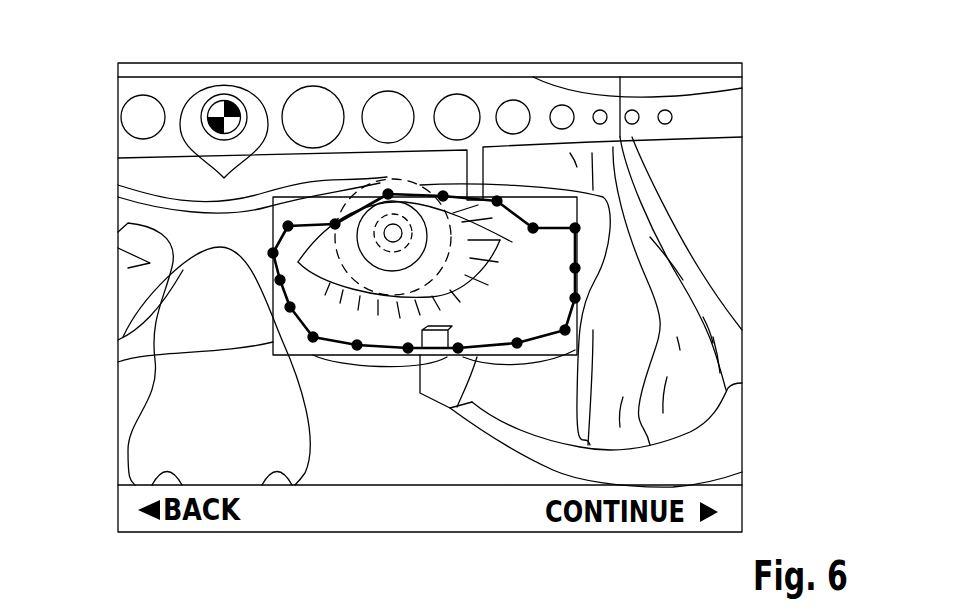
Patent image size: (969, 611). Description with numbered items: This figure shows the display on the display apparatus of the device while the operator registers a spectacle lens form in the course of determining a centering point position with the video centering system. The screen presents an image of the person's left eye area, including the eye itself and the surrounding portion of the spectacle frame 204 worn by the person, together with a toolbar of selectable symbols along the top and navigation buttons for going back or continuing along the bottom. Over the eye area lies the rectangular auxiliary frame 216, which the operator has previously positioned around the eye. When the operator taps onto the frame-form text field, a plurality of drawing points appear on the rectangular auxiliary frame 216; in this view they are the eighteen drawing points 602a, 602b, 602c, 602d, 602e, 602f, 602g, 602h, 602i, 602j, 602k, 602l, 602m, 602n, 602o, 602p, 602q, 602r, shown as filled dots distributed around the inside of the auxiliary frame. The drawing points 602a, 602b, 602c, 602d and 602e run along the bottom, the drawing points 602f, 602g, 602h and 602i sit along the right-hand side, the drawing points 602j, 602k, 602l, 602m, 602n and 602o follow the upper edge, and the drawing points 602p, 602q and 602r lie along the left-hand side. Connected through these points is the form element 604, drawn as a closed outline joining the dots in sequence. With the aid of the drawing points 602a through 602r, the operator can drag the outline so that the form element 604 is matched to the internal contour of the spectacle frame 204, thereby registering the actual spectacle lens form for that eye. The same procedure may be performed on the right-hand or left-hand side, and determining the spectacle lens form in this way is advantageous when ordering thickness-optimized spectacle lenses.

The spectacle frame 204 is at (607, 230).
The rectangular auxiliary frame 216 is at (273, 197).
The form element 604 is at (270, 340).
The drawing point 602a is at (313, 337).
The drawing point 602b is at (357, 345).
The drawing point 602c is at (408, 348).
The drawing point 602d is at (458, 348).
The drawing point 602e is at (516, 343).
The drawing point 602f is at (568, 330).
The drawing point 602g is at (578, 298).
The drawing point 602h is at (580, 267).
The drawing point 602i is at (575, 228).
The drawing point 602j is at (533, 228).
The drawing point 602k is at (497, 201).
The drawing point 602l is at (443, 196).
The drawing point 602m is at (388, 194).
The drawing point 602n is at (335, 224).
The drawing point 602o is at (288, 226).
The drawing point 602p is at (273, 253).
The drawing point 602q is at (280, 280).
The drawing point 602r is at (290, 307).